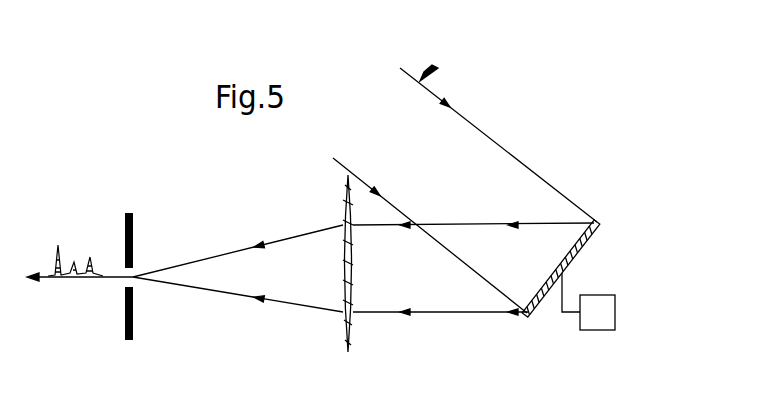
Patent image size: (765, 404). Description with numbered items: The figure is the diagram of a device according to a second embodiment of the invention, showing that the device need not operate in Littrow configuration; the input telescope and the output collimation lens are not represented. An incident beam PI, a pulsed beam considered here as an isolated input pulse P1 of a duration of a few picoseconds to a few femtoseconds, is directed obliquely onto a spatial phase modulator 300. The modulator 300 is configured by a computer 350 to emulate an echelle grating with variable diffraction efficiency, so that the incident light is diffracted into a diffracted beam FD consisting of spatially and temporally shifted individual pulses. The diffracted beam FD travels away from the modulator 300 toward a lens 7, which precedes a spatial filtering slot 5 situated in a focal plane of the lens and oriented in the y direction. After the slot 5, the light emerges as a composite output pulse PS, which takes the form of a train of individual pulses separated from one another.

The slot 5 is at (133, 218).
The lens 7 is at (343, 200).
The composite output pulse PS is at (69, 236).
The diffracted beam FD is at (442, 312).
The incident beam PI is at (495, 158).
The input pulse P1 is at (437, 64).
The spatial phase modulator 300 is at (583, 250).
The computer 350 is at (595, 330).